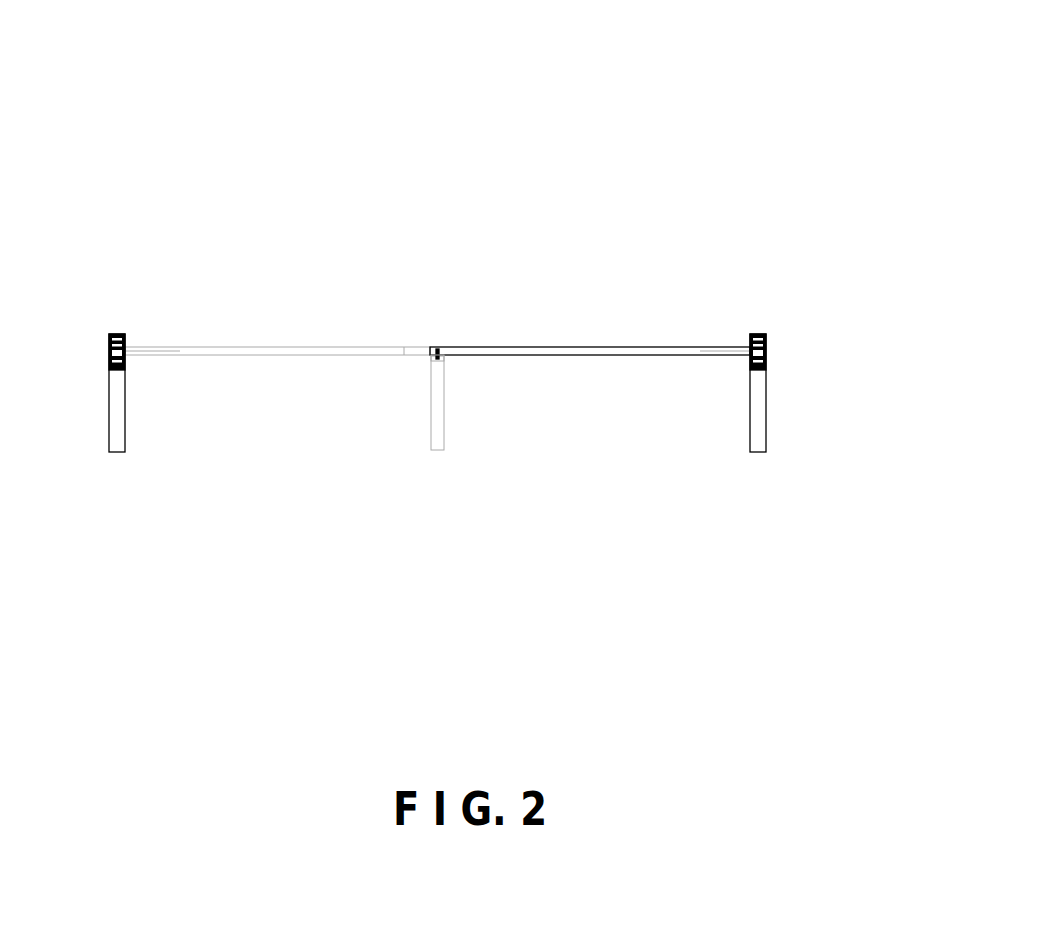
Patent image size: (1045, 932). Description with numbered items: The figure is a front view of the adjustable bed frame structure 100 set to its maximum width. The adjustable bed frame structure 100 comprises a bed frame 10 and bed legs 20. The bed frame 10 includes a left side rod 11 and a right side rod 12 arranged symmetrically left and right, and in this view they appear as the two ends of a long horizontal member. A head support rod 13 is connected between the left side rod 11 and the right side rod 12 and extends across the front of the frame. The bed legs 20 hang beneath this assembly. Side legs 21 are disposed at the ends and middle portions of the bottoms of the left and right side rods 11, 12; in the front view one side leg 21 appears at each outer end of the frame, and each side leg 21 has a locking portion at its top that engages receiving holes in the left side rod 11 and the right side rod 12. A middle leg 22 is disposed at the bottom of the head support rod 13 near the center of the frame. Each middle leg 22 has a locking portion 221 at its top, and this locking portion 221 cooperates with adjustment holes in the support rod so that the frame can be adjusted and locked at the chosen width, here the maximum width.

The adjustable bed frame structure 100 is at (643, 108).
The bed frame 10 is at (685, 227).
The left side rod 11 is at (128, 335).
The right side rod 12 is at (748, 337).
The head support rod 13 is at (337, 350).
The bed legs 20 is at (708, 615).
The side leg 21 is at (118, 452).
The middle leg 22 is at (437, 440).
The locking portion 221 is at (428, 354).